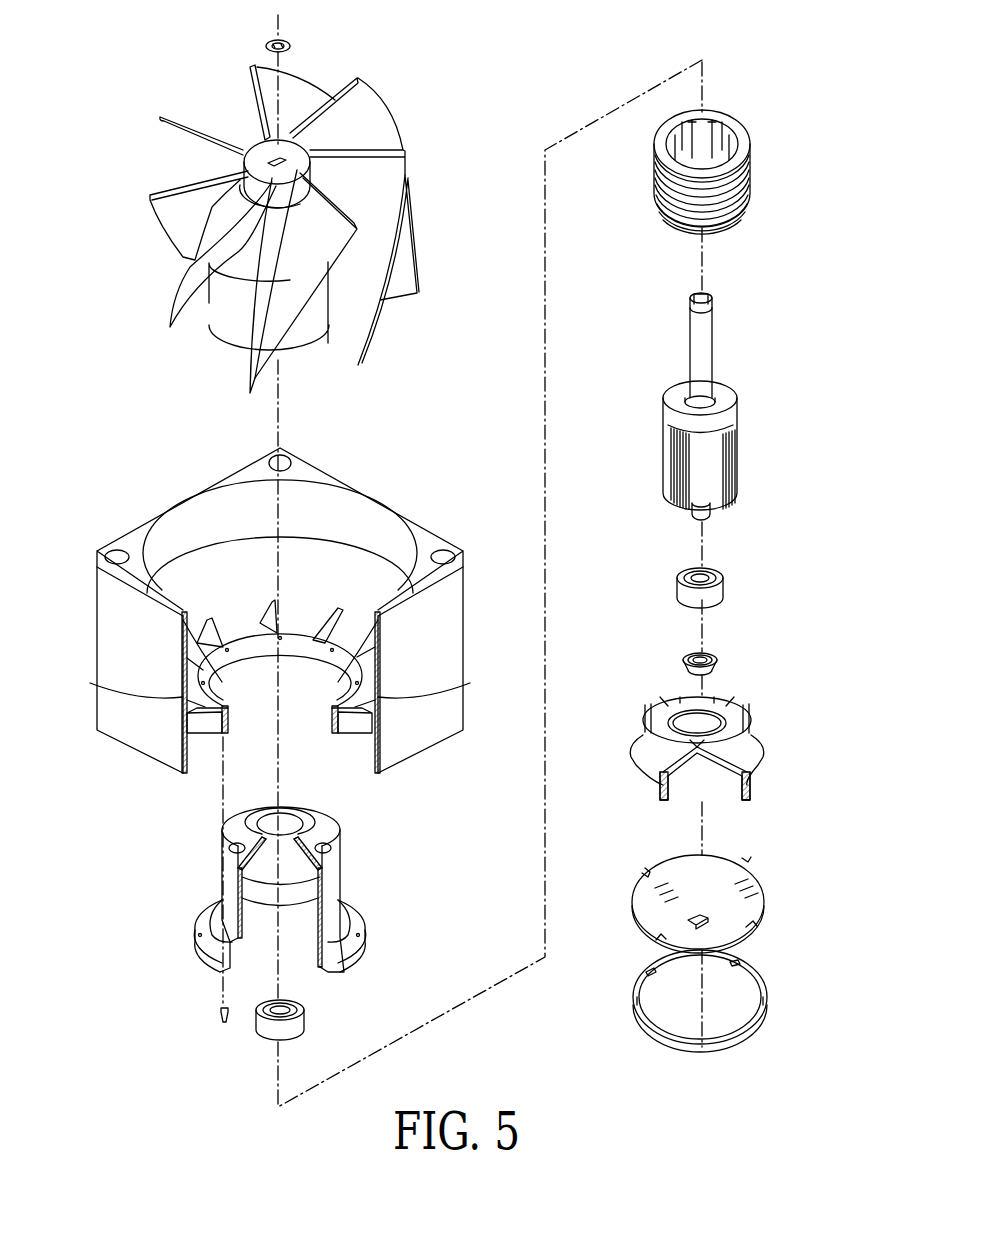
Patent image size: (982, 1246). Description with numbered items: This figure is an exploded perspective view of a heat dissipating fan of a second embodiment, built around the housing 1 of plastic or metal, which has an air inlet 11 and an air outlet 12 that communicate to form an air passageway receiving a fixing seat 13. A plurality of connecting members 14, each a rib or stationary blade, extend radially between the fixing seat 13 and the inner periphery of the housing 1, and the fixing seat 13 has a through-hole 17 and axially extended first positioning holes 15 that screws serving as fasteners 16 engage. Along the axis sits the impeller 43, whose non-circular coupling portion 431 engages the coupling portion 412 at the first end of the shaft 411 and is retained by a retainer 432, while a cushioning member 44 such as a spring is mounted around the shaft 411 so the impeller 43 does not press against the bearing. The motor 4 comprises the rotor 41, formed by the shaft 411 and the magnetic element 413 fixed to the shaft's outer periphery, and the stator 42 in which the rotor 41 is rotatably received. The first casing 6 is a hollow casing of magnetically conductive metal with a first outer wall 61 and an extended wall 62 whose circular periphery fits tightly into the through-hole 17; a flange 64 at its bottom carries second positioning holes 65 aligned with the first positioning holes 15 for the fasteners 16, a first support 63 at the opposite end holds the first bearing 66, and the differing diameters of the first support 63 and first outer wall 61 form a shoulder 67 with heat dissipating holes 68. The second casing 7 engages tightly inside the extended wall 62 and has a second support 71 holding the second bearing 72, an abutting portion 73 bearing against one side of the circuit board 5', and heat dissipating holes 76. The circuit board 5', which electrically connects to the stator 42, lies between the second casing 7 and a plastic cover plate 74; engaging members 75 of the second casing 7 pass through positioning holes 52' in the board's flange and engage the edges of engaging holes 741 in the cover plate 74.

The housing 1 is at (259, 615).
The air inlet 11 is at (346, 488).
The air outlet 12 is at (202, 757).
The fixing seat 13 is at (215, 657).
The connecting member 14 is at (268, 612).
The first positioning hole 15 is at (188, 703).
The fastener 16 is at (221, 1012).
The through-hole 17 is at (252, 650).
The motor 4 is at (684, 315).
The rotor 41 is at (711, 389).
The shaft 411 is at (706, 345).
The coupling portion 412 is at (711, 300).
The magnetic element 413 is at (731, 438).
The stator 42 is at (657, 184).
The impeller 43 is at (302, 218).
The non-circular coupling portion 431 is at (275, 158).
The retainer 432 is at (292, 41).
The cushioning member 44 is at (718, 661).
The circuit board 5' is at (743, 904).
The positioning hole 52' is at (748, 903).
The first casing 6 is at (289, 895).
The first outer wall 61 is at (341, 876).
The extended wall 62 is at (212, 938).
The first support 63 is at (247, 833).
The flange 64 is at (204, 953).
The second positioning hole 65 is at (220, 968).
The first bearing 66 is at (304, 1023).
The shoulder 67 is at (322, 822).
The heat dissipating hole 68 is at (331, 840).
The second casing 7 is at (712, 765).
The second support 71 is at (742, 721).
The second bearing 72 is at (678, 592).
The abutting portion 73 is at (748, 797).
The cover plate 74 is at (744, 1001).
The engaging hole 741 is at (747, 955).
The engaging member 75 is at (659, 802).
The heat dissipating hole 76 is at (756, 755).